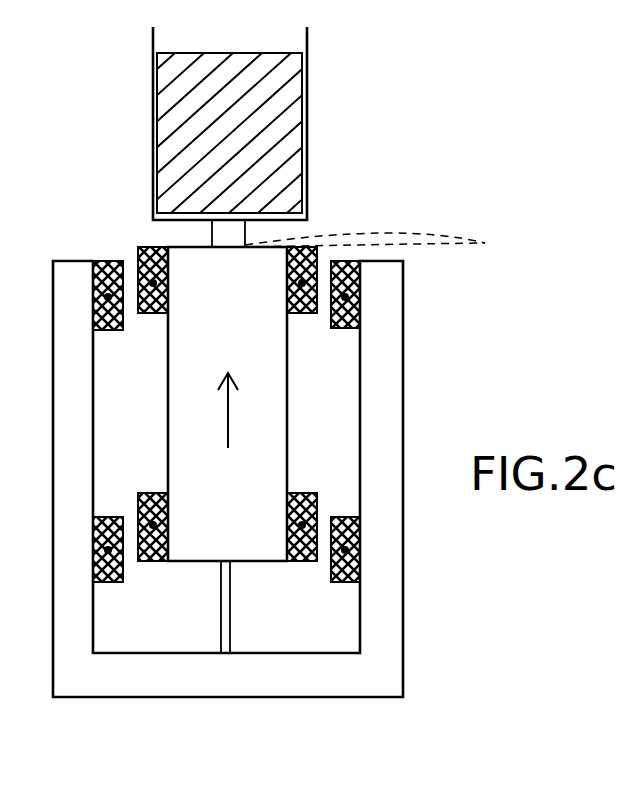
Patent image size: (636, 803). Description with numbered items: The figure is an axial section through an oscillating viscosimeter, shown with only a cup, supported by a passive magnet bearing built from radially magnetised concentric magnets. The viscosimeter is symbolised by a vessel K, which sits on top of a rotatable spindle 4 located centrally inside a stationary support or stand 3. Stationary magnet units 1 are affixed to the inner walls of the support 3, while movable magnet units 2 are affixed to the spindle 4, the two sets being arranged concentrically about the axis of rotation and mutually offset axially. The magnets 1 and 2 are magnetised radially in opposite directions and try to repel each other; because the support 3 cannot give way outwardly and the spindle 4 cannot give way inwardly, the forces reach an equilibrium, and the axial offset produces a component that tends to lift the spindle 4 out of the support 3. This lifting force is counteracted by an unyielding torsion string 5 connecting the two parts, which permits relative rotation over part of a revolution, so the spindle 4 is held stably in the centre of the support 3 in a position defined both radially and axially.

The stationary magnet unit 1 is at (108, 330).
The movable magnet unit 2 is at (147, 313).
The support or stand 3 is at (403, 398).
The spindle 4 is at (288, 425).
The torsion string 5 is at (232, 632).
The vessel K is at (307, 152).